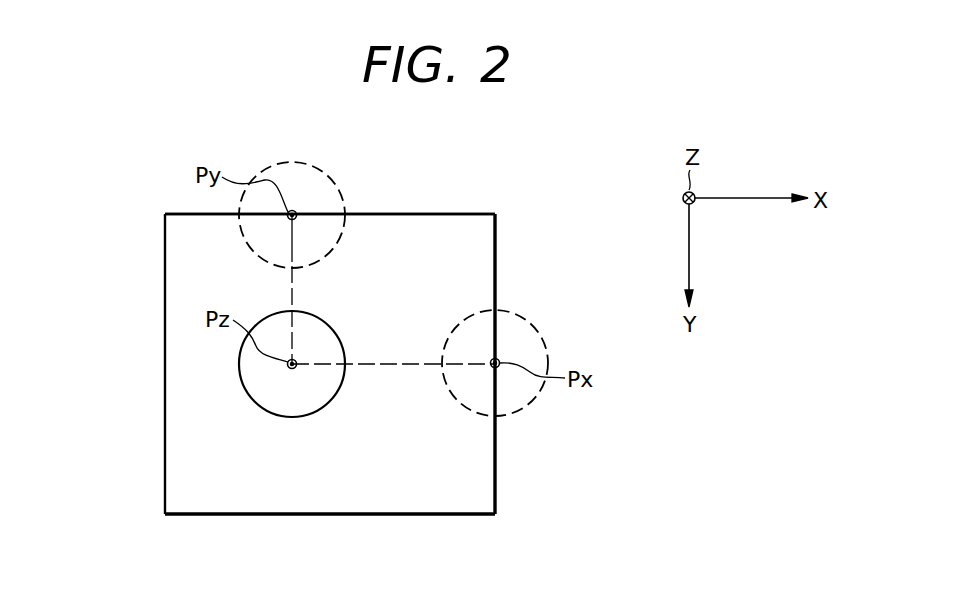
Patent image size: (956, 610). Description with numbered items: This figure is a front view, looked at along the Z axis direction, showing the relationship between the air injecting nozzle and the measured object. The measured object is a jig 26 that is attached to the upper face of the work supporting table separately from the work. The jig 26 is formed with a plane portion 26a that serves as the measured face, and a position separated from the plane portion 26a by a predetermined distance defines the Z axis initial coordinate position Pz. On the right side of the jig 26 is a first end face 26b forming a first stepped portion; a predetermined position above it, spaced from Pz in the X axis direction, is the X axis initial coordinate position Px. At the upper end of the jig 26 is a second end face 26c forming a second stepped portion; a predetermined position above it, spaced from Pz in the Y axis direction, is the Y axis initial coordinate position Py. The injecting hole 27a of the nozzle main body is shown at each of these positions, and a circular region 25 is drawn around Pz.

The circular region / suction pad 25 is at (310, 410).
The jig 26 is at (343, 377).
The plane portion 26a is at (250, 517).
The first end face 26b is at (497, 458).
The second end face 26c is at (405, 212).
The injecting hole 27a is at (296, 210).